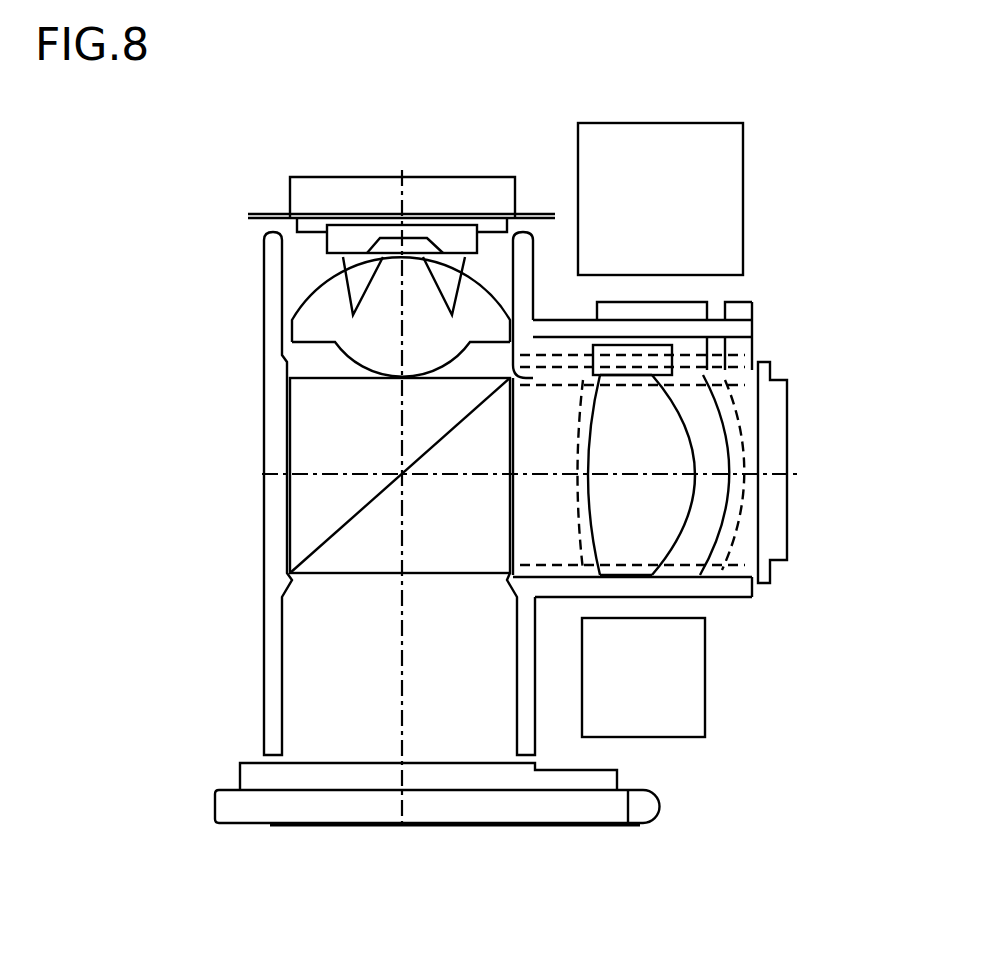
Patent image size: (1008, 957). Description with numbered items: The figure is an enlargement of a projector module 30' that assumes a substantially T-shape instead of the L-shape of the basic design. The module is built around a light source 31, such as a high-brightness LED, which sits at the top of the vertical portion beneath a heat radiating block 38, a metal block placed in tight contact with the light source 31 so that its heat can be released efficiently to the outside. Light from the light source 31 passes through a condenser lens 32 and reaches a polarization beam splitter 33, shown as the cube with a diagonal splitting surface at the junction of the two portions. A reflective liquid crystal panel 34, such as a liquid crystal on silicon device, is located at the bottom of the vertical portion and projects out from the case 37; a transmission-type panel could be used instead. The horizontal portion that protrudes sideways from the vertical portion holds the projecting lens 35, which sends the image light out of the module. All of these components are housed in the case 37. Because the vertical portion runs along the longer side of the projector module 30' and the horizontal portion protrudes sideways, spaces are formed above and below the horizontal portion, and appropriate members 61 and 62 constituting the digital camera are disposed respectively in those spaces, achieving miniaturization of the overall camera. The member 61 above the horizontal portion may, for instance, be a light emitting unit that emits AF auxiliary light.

The projector module 30' is at (150, 539).
The light source 31 is at (345, 235).
The condenser lens 32 is at (307, 320).
The polarization beam splitter 33 is at (303, 433).
The reflective liquid crystal panel 34 is at (465, 775).
The projecting lens 35 is at (643, 438).
The case 37 is at (253, 633).
The heat radiating block 38 is at (460, 195).
The member 61 is at (722, 177).
The member 62 is at (700, 676).